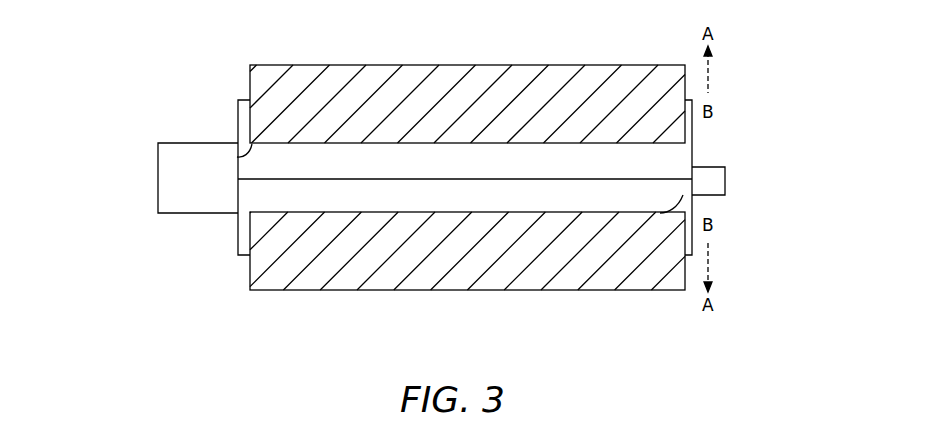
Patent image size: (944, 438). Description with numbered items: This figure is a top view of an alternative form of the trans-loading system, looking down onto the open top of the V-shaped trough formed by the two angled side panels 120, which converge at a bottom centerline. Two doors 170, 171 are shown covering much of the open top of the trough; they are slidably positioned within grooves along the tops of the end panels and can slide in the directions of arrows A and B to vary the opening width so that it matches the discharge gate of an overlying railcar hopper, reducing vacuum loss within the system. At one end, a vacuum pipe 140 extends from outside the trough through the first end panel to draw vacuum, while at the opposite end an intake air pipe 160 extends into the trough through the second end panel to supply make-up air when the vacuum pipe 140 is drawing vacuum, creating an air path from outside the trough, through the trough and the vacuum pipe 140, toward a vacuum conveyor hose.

The door 170 is at (541, 44).
The door 171 is at (587, 261).
The vacuum pipe 140 is at (208, 203).
The intake air pipe 160 is at (699, 167).
The angled side panels 120 is at (236, 156).